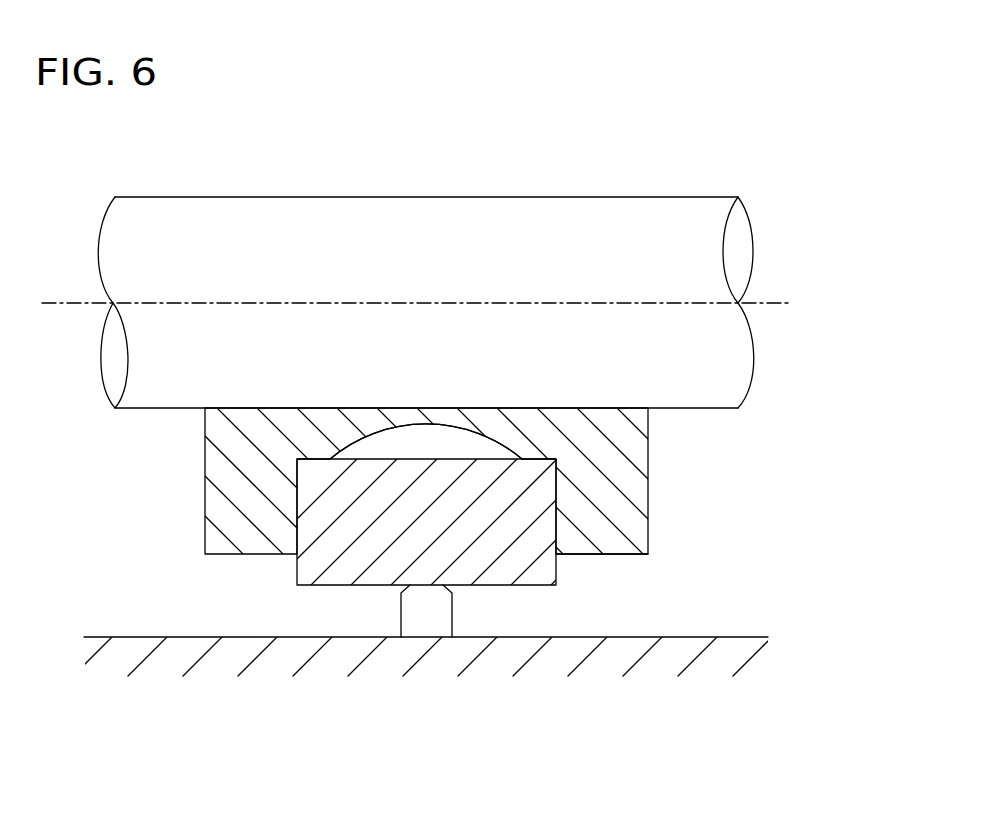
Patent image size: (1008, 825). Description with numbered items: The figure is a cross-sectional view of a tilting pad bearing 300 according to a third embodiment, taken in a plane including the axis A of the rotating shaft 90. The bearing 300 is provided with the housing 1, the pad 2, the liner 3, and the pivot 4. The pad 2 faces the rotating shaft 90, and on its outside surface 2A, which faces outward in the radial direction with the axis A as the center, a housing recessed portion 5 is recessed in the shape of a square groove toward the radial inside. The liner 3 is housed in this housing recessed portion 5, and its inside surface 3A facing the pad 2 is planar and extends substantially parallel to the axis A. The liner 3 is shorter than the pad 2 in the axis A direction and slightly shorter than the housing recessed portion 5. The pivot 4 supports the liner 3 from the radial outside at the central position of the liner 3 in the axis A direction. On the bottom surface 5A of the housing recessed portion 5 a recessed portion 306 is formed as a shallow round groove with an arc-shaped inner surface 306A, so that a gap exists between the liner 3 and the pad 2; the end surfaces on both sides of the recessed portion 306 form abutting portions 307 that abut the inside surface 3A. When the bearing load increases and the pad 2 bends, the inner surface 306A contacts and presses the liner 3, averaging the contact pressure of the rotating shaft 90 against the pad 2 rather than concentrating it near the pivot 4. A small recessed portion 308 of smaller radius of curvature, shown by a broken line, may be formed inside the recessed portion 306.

The housing 1 is at (737, 657).
The pad 2 is at (246, 527).
The outside surface 2A is at (607, 556).
The liner 3 is at (360, 547).
The inside surface 3A is at (349, 458).
The pivot 4 is at (425, 612).
The housing recessed portion 5 is at (545, 512).
The bottom surface 5A is at (530, 462).
The rotating shaft 90 is at (632, 222).
The axis A is at (785, 303).
The tilting pad bearing 300 is at (777, 475).
The recessed portion 306 is at (468, 440).
The inner surface 306A is at (392, 440).
The abutting portions 307 is at (553, 485).
The small recessed portion 308 is at (428, 424).